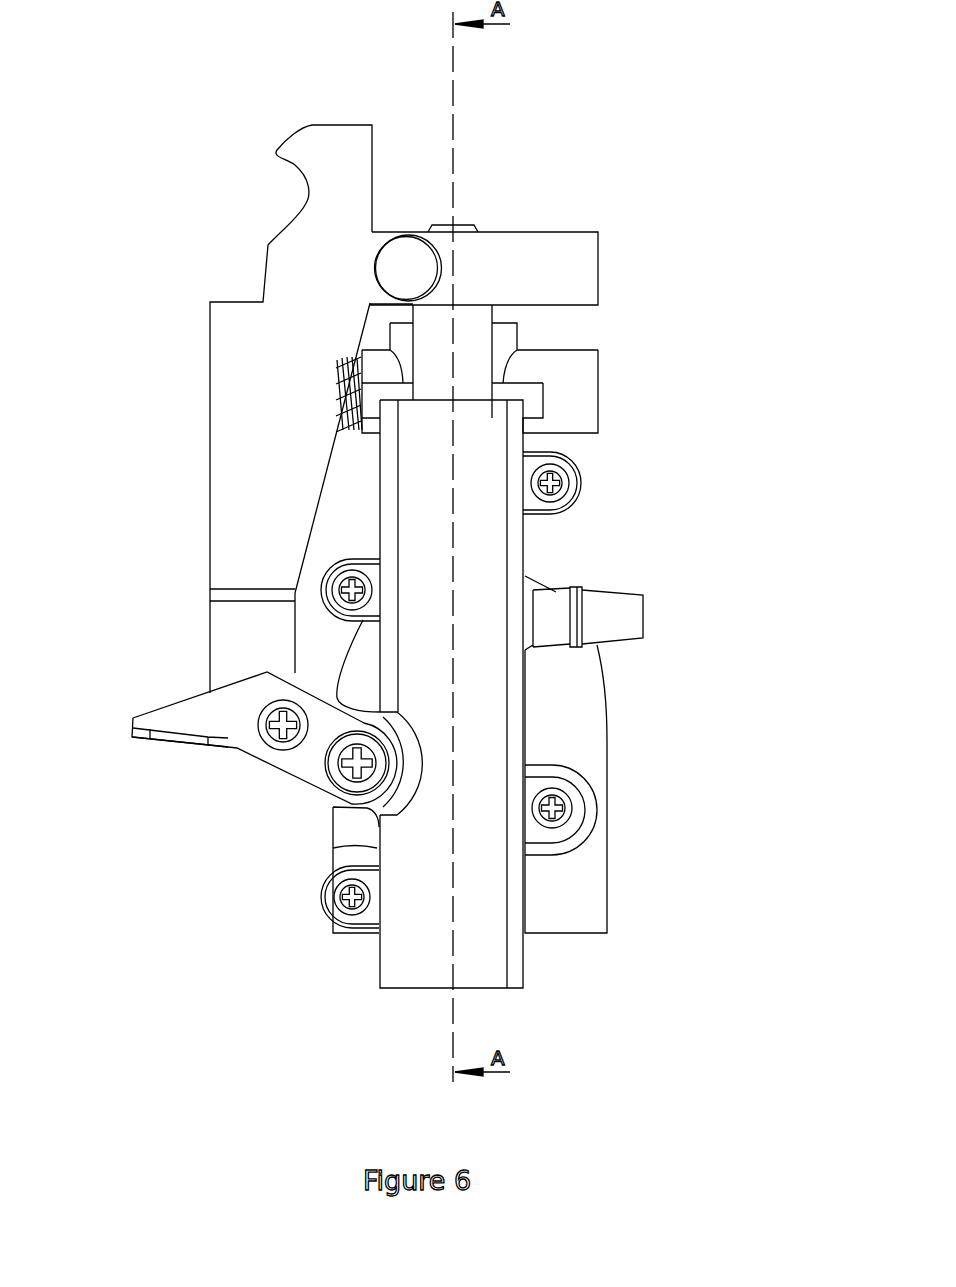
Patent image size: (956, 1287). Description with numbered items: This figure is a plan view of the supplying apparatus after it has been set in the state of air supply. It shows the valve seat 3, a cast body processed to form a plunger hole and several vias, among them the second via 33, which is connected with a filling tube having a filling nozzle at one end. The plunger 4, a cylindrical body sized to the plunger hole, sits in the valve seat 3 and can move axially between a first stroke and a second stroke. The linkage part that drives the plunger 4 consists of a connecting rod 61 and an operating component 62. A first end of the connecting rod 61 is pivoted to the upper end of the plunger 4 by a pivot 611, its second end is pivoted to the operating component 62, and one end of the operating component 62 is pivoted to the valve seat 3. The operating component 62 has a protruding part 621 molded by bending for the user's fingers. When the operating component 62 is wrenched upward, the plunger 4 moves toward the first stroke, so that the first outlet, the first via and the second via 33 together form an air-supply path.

The valve seat 3 is at (593, 516).
The plunger 4 is at (473, 332).
The second via 33 is at (643, 617).
The connecting rod 61 is at (242, 397).
The pivot 611 is at (403, 262).
The operating component 62 is at (208, 720).
The protruding part 621 is at (183, 735).